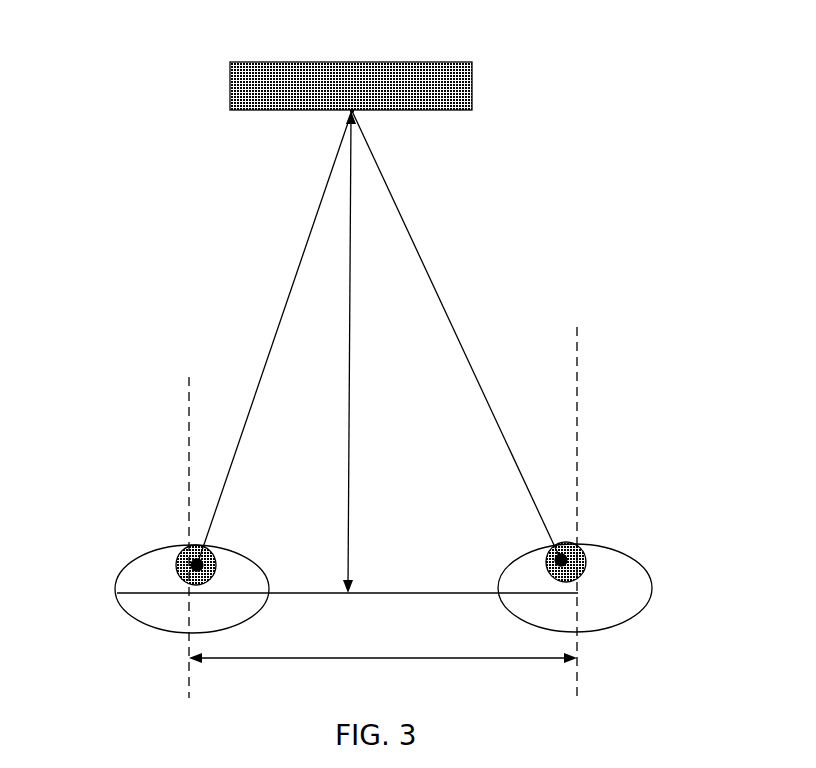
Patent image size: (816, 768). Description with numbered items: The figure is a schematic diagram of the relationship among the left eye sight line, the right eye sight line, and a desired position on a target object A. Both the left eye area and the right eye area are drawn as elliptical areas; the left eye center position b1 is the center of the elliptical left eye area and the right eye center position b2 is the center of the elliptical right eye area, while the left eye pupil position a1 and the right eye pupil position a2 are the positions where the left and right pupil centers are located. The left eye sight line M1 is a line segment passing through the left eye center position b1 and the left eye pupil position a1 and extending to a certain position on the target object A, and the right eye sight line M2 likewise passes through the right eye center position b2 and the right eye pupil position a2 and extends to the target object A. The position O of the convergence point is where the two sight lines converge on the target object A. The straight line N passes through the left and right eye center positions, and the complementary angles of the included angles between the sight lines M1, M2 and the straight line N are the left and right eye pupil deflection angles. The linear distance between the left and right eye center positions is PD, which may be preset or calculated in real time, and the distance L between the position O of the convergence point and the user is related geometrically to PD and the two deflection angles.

The target object A is at (447, 62).
The position of the convergence point O is at (365, 124).
The left eye sight line M1 is at (253, 398).
The right eye sight line M2 is at (472, 365).
The distance between the position of the convergence point and the user L is at (339, 352).
The straight line passing through the left eye center position and the right eye cen N is at (423, 593).
The linear distance between the left eye center position and the right eye center po PD is at (383, 649).
The left eye pupil position a1 is at (195, 543).
The right eye pupil position a2 is at (565, 543).
The left eye center position b1 is at (172, 593).
The right eye center position b2 is at (580, 593).